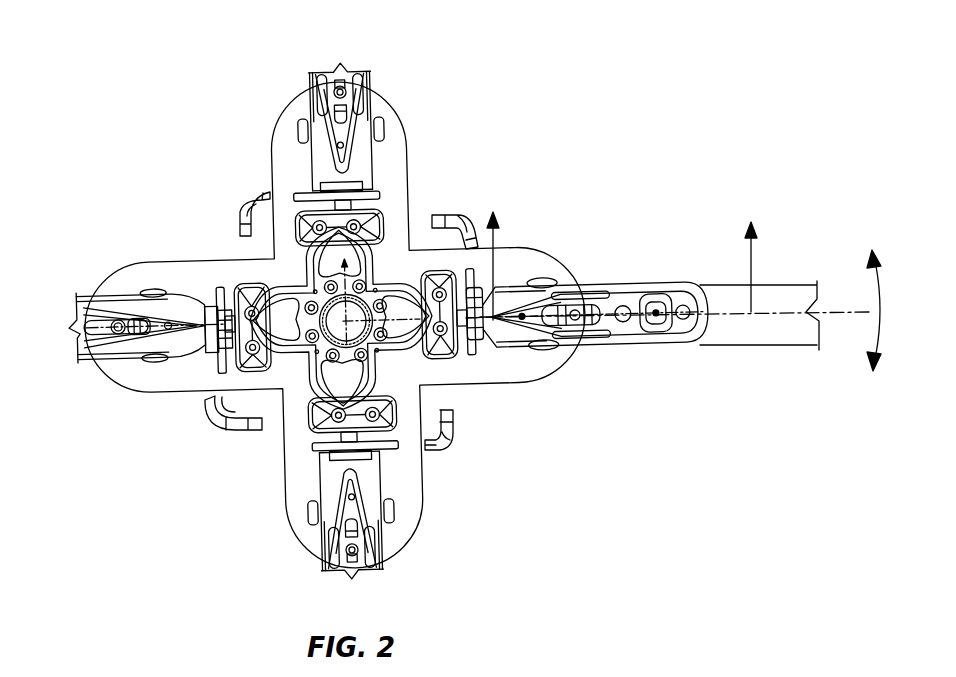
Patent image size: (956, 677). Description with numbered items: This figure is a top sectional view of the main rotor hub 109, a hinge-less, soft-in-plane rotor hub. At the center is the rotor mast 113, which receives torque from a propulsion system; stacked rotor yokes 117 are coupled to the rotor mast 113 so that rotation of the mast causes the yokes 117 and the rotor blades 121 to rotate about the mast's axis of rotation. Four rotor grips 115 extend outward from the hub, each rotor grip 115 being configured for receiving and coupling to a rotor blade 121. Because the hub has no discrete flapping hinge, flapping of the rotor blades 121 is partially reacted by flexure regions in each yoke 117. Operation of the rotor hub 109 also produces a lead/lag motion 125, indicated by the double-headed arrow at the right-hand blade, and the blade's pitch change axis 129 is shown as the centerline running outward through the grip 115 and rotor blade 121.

The main rotor hub 109 is at (144, 198).
The rotor mast 113 is at (355, 328).
The rotor grip 115 is at (300, 85).
The rotor yoke 117 is at (403, 112).
The rotor blade 121 is at (768, 348).
The lead/lag motion 125 is at (876, 290).
The pitch change axis 129 is at (855, 317).